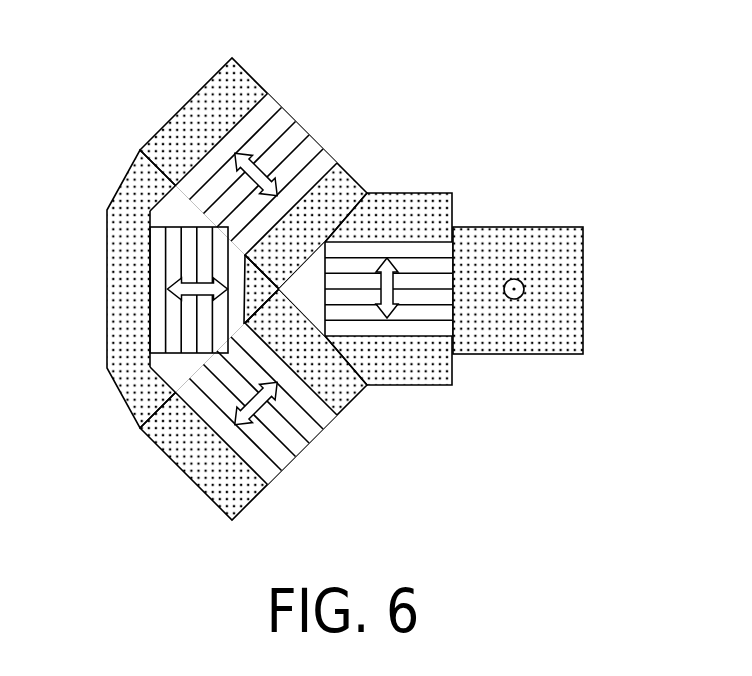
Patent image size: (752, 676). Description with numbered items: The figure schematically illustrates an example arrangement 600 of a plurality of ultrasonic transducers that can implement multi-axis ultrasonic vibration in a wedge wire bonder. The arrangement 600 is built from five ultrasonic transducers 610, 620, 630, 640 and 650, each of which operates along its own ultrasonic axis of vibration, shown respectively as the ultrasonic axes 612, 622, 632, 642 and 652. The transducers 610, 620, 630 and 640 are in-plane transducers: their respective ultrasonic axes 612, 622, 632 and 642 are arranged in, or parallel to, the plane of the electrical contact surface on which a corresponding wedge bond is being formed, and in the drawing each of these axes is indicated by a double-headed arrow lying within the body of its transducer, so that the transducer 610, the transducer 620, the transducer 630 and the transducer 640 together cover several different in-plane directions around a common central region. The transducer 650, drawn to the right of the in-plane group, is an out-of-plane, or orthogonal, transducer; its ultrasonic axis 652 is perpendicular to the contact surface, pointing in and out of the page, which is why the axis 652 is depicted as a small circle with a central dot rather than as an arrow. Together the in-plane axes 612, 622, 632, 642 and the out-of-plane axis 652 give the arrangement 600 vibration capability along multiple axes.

The arrangement 600 is at (636, 157).
The ultrasonic transducer 610 is at (243, 69).
The ultrasonic axis 612 is at (255, 160).
The ultrasonic transducer 620 is at (120, 289).
The ultrasonic axis 622 is at (178, 297).
The ultrasonic transducer 630 is at (173, 462).
The ultrasonic axis 632 is at (252, 408).
The ultrasonic transducer 640 is at (410, 193).
The ultrasonic axis 642 is at (397, 320).
The ultrasonic transducer 650 is at (583, 288).
The ultrasonic axis 652 is at (519, 298).